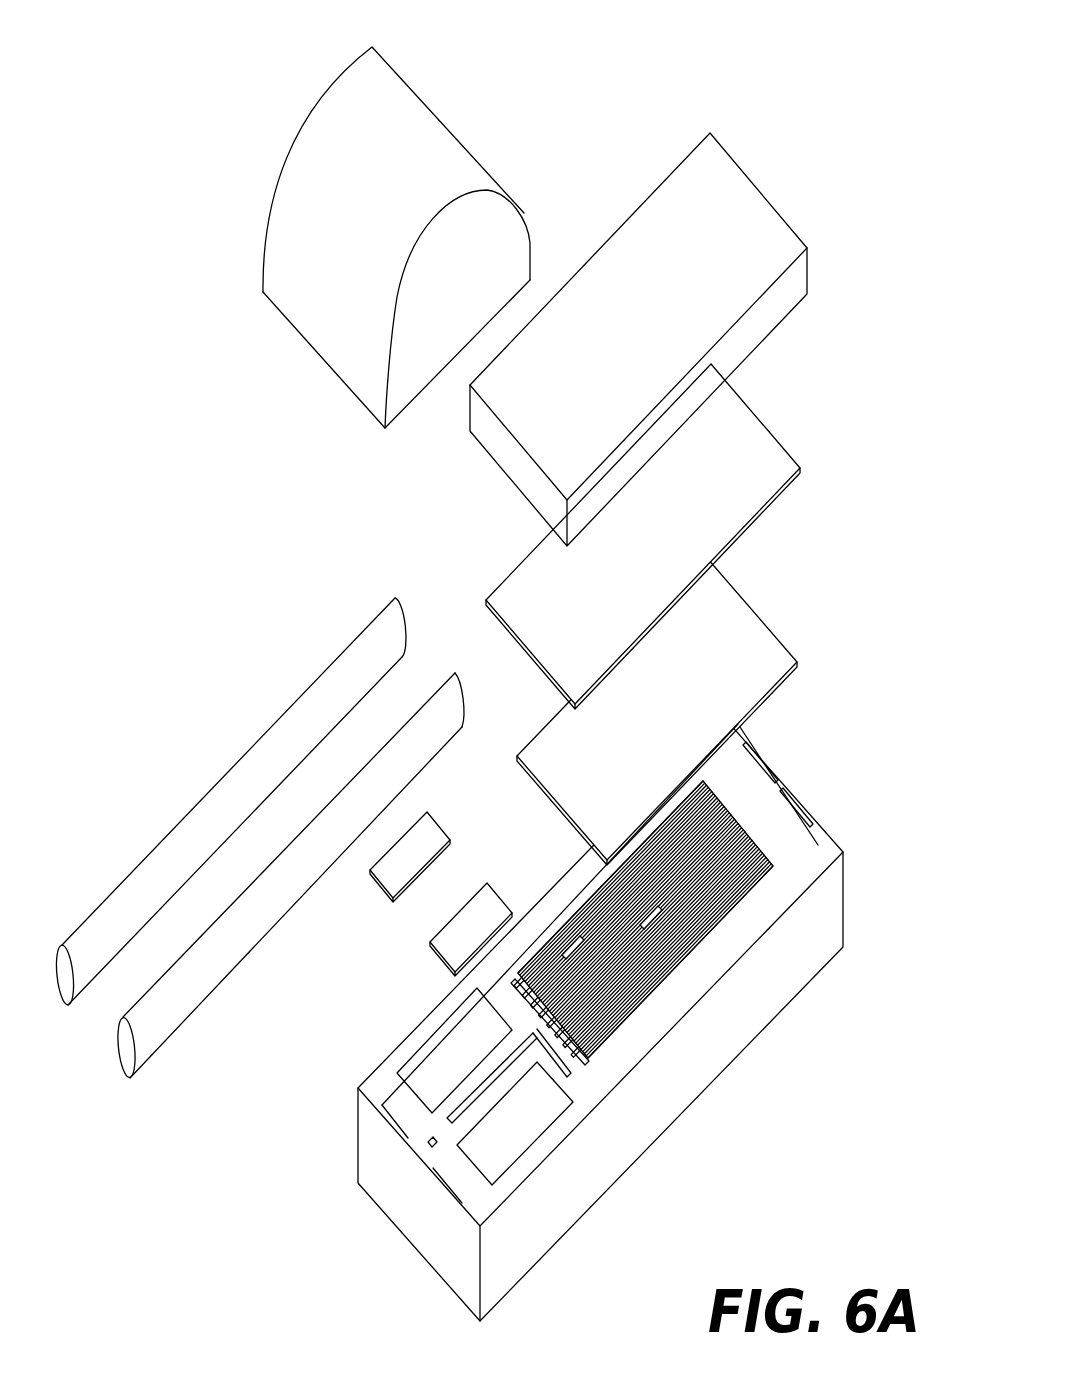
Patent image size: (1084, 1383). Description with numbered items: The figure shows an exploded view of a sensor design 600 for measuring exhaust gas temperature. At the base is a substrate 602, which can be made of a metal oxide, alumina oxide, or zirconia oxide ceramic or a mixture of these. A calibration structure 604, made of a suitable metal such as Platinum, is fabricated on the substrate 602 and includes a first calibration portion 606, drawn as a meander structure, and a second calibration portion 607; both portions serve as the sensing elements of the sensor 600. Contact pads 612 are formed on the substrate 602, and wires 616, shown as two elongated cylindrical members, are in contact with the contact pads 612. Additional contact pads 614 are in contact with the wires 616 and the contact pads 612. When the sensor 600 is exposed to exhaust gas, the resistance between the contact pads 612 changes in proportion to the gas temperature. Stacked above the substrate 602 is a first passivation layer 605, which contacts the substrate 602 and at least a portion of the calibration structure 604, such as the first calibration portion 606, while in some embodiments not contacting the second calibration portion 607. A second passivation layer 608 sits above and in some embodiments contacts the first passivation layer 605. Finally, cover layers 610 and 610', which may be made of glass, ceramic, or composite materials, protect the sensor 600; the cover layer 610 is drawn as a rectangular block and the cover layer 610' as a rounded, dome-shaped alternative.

The sensor design 600 is at (827, 56).
The substrate 602 is at (816, 922).
The calibration structure 604 is at (782, 825).
The first passivation layer 605 is at (760, 608).
The first calibration portion 606 is at (705, 950).
The second calibration portion 607 is at (445, 1123).
The second passivation layer 608 is at (766, 419).
The cover layer 610 is at (648, 338).
The cover layer 610' is at (408, 237).
The contact pads 612 is at (409, 1042).
The contact pads 614 is at (446, 821).
The wires 616 is at (190, 807).